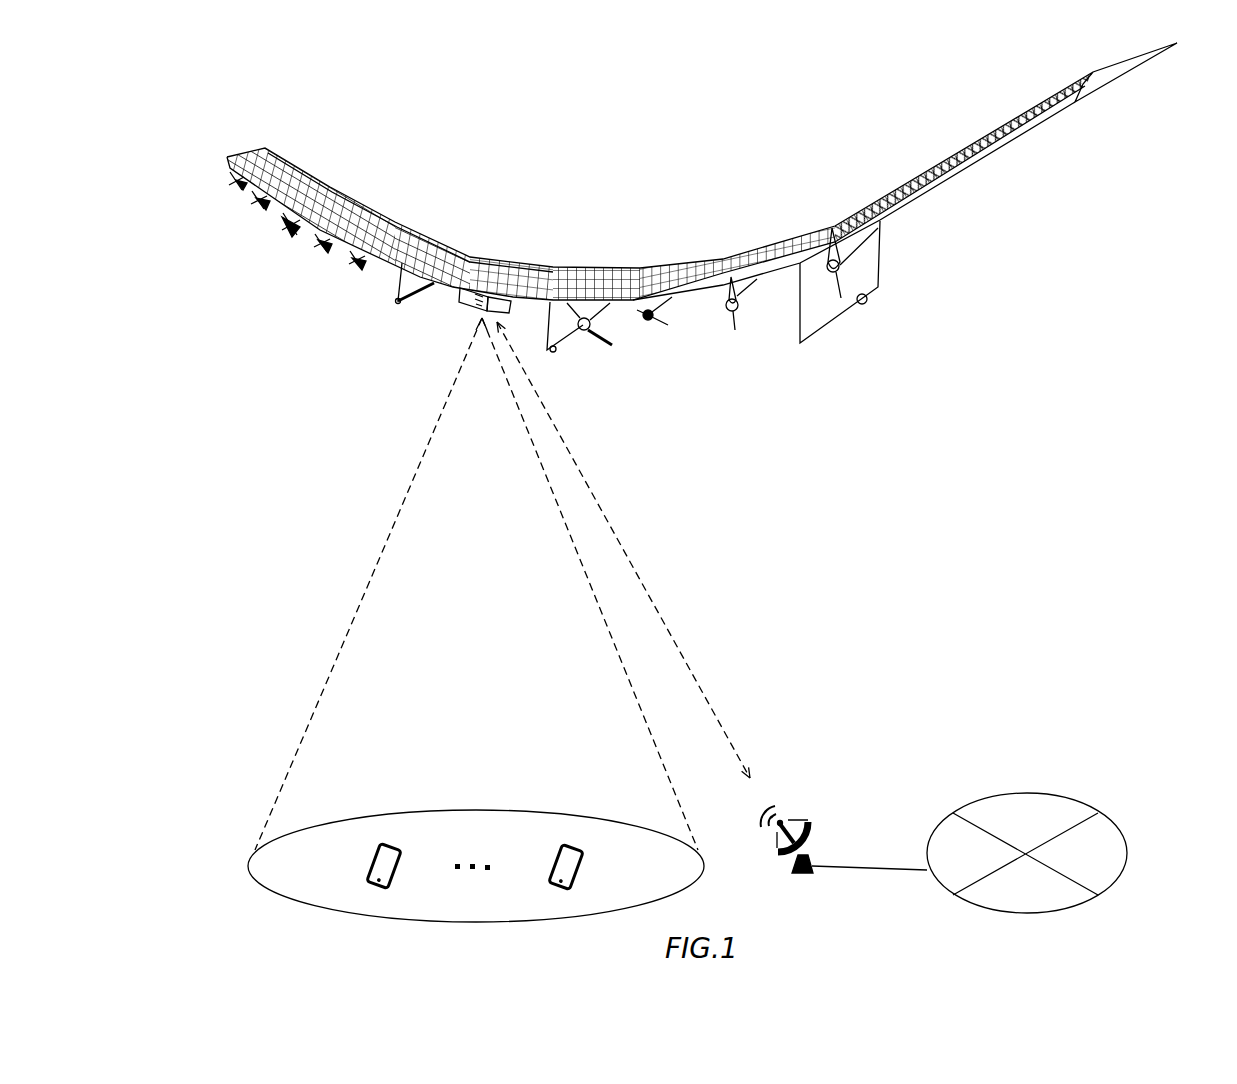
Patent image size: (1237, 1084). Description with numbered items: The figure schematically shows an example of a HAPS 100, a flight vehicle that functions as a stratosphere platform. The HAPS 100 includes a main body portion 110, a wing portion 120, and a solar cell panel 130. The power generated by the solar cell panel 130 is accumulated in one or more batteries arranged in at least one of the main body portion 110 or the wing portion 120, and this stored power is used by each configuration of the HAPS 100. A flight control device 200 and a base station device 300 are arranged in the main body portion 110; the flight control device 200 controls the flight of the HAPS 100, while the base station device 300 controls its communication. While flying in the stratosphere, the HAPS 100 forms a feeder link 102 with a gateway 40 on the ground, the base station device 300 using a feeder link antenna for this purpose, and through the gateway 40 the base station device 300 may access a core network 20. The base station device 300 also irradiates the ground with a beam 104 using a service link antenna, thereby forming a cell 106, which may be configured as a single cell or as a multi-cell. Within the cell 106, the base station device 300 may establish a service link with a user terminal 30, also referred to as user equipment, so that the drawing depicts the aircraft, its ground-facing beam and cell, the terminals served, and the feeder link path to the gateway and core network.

The core network 20 is at (1121, 809).
The user terminal 30 is at (392, 852).
The gateway 40 is at (817, 833).
The HAPS 100 is at (272, 92).
The feeder link 102 is at (605, 517).
The beam 104 is at (388, 538).
The cell 106 is at (476, 813).
The main body portion 110 is at (452, 291).
The wing portion 120 is at (283, 143).
The solar cell panel 130 is at (400, 199).
The flight control device 200 is at (491, 268).
The base station device 300 is at (478, 307).